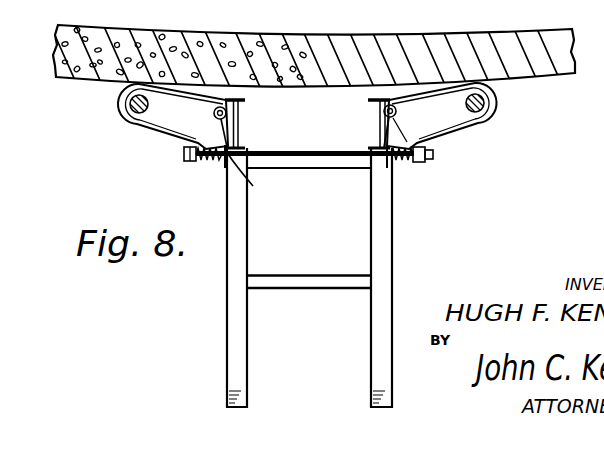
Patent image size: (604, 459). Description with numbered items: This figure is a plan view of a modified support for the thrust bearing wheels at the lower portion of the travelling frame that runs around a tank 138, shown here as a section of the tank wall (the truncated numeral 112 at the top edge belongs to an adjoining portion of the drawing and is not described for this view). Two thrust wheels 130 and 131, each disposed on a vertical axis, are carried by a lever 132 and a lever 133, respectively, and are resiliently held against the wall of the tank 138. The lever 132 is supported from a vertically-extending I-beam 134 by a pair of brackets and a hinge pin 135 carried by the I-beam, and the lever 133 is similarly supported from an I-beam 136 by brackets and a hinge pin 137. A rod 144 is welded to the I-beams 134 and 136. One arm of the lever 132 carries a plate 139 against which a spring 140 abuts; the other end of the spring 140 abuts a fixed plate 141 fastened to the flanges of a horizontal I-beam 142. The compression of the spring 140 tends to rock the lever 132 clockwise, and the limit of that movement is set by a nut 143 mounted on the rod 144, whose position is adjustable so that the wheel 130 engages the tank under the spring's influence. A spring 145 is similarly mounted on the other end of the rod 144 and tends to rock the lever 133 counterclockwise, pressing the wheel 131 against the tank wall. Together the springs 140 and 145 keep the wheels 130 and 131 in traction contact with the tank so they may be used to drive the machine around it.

The slab (partial numeral) 112 is at (113, 5).
The thrust wheel 130 is at (147, 119).
The thrust wheel 131 is at (469, 120).
The lever 132 is at (158, 113).
The lever 133 is at (455, 110).
The vertically-extending I-beam 134 is at (241, 131).
The hinge pin 135 is at (246, 105).
The vertically-extending I-beam 136 is at (373, 130).
The hinge pin 137 is at (367, 106).
The tank 138 is at (535, 44).
The plate 139 is at (204, 164).
The spring 140 is at (213, 114).
The fixed plate 141 is at (257, 176).
The horizontal I-beam 142 is at (238, 245).
The nut 143 is at (178, 151).
The rod 144 is at (316, 160).
The spring 145 is at (400, 146).